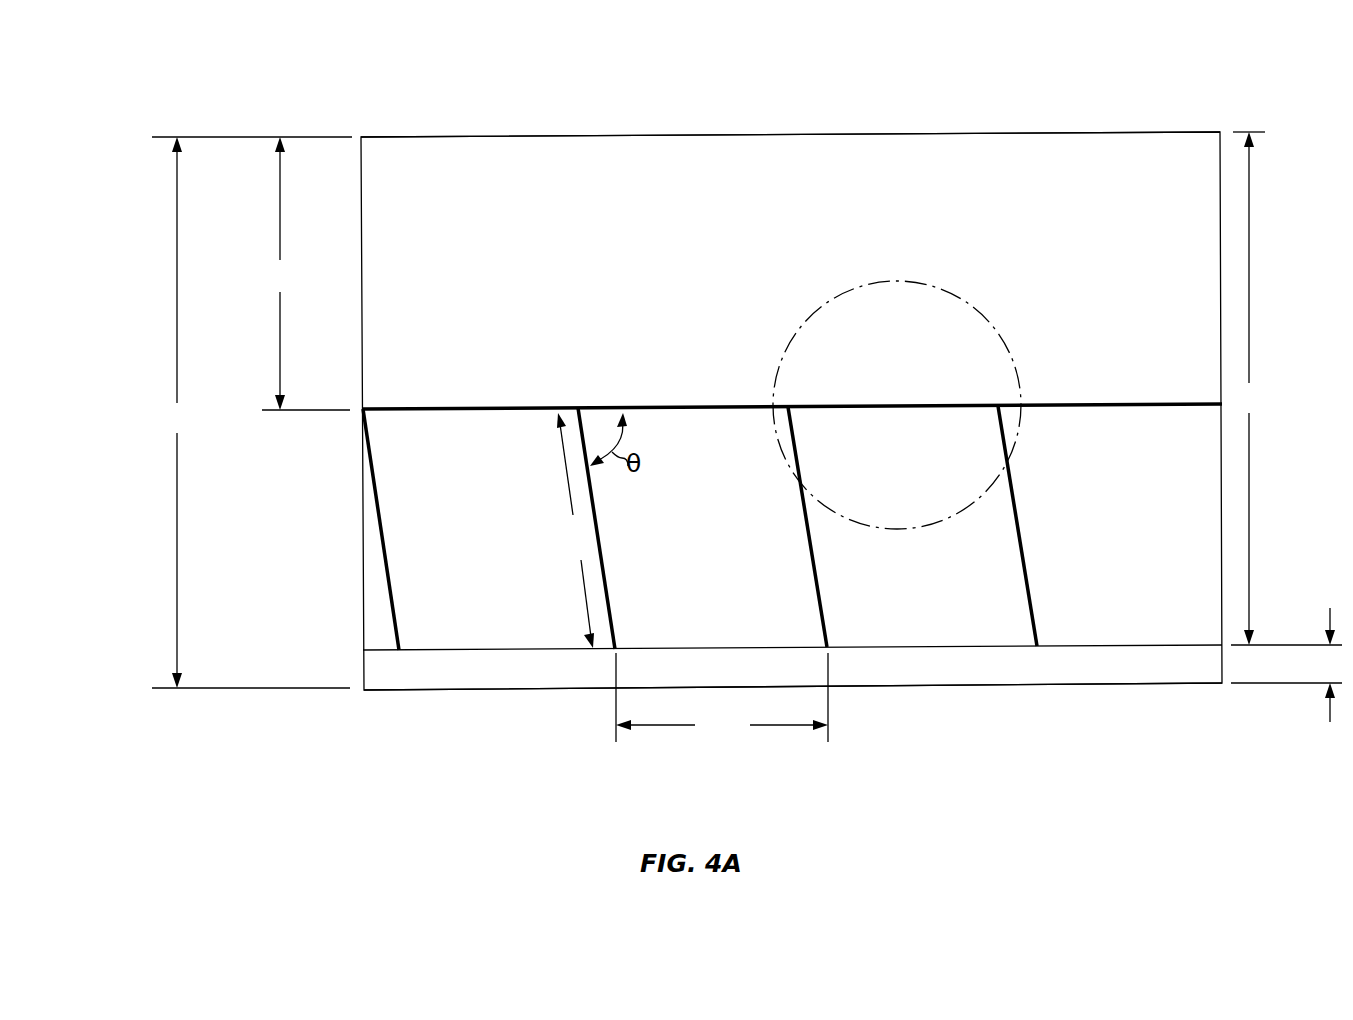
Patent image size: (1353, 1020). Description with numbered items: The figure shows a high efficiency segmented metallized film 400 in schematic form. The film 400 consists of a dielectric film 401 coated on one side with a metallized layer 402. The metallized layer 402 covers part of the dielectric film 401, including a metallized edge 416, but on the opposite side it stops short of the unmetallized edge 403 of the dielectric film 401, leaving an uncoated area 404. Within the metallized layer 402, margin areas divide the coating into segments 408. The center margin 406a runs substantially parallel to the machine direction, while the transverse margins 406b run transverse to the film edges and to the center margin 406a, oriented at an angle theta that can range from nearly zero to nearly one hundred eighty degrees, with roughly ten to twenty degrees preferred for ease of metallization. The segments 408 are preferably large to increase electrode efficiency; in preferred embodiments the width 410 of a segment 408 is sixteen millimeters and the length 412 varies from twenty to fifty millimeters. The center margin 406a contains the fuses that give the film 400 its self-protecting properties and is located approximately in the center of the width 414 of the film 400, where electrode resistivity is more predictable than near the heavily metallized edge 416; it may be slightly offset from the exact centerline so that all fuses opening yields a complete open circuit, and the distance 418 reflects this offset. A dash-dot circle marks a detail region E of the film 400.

The segmented metallized film 400 is at (559, 96).
The dielectric film 401 is at (1133, 685).
The metallized layer 402 is at (1285, 388).
The unmetallized edge 403 is at (930, 688).
The uncoated area 404 is at (1292, 679).
The center margin 406a is at (400, 409).
The transverse margins 406b is at (395, 621).
The segments 408 is at (500, 548).
The width of a segment 410 is at (722, 697).
The length of a segment 412 is at (571, 530).
The width of film 414 is at (252, 412).
The metallized edge 416 is at (710, 137).
The distance 418 is at (303, 273).
The detail region E is at (924, 302).